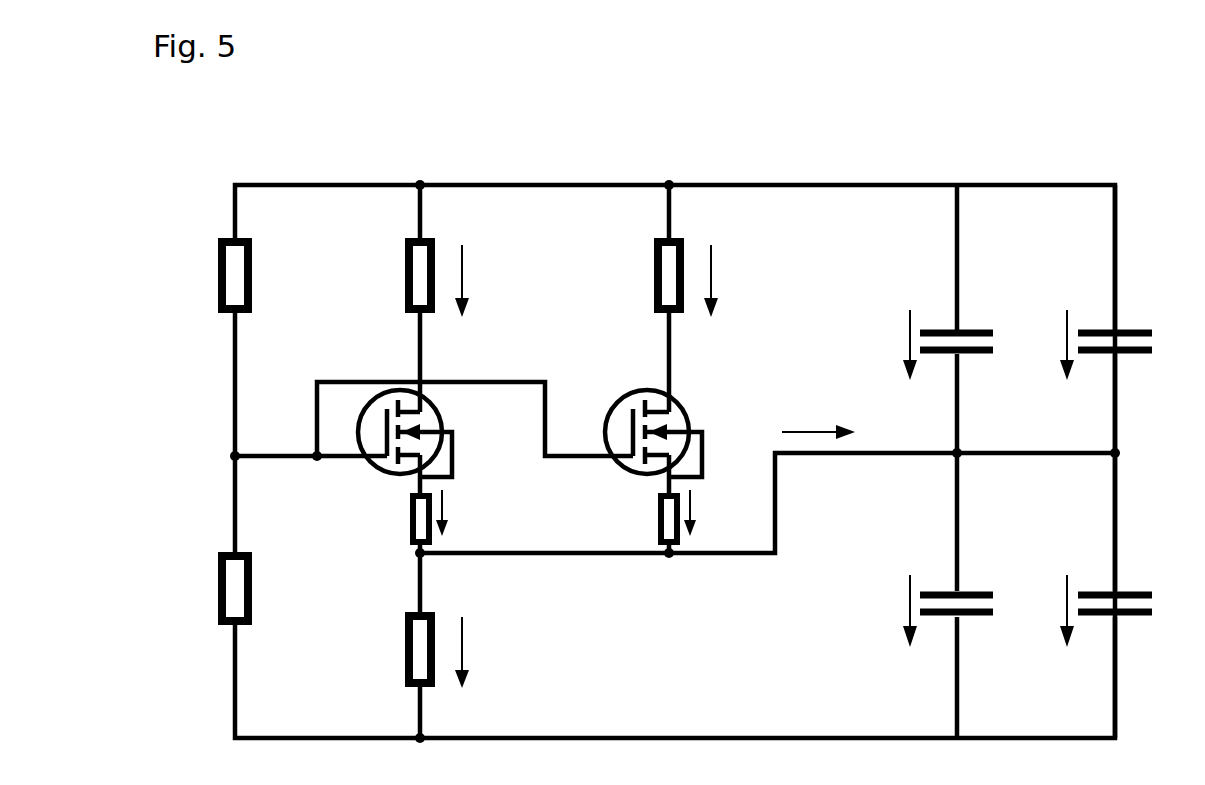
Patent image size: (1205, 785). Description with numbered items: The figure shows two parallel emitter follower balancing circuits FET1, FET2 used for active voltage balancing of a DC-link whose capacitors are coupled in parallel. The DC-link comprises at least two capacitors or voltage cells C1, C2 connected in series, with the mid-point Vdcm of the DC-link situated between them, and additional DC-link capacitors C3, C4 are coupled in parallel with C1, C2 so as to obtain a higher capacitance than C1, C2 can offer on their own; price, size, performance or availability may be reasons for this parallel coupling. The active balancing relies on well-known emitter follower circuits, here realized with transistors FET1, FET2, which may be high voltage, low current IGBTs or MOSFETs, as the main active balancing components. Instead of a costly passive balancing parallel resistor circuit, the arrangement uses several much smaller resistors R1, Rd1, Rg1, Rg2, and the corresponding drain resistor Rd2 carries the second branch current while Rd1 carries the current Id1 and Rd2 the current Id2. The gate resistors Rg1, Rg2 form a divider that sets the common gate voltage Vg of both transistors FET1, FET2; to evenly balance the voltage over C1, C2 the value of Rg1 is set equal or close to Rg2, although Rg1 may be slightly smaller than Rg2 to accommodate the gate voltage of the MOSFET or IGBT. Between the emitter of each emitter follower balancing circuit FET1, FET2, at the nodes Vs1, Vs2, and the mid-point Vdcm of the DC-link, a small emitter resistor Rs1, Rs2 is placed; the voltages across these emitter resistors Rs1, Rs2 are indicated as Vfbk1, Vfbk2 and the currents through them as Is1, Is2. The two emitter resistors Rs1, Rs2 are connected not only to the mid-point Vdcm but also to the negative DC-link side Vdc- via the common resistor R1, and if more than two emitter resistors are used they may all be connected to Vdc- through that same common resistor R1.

The gate resistor Rg1 is at (200, 275).
The gate resistor Rg2 is at (200, 588).
The drain resistor Rd1 is at (382, 275).
The drain resistor Rd2 is at (634, 275).
The common resistor R1 is at (404, 652).
The emitter resistor Rs1 is at (384, 514).
The emitter resistor Rs2 is at (631, 514).
The drain current Id1 is at (481, 281).
The drain current Id2 is at (729, 281).
The emitter resistor current Is1 is at (463, 514).
The emitter resistor current Is2 is at (707, 514).
The emitter follower balancing circuit FET1 is at (403, 417).
The emitter follower balancing circuit FET2 is at (651, 417).
The gate voltage node Vg is at (282, 438).
The emitter voltage node Vs1 is at (477, 478).
The emitter voltage node Vs2 is at (727, 478).
The emitter resistor voltage Vfbk1 is at (363, 527).
The emitter resistor voltage Vfbk2 is at (608, 527).
The DC-link capacitor C1 is at (931, 343).
The DC-link capacitor C2 is at (931, 605).
The parallel DC-link capacitor C3 is at (1078, 346).
The parallel DC-link capacitor C4 is at (1083, 606).
The DC-link mid-point Vdcm is at (987, 483).
The negative DC-link side Vdc- is at (992, 718).